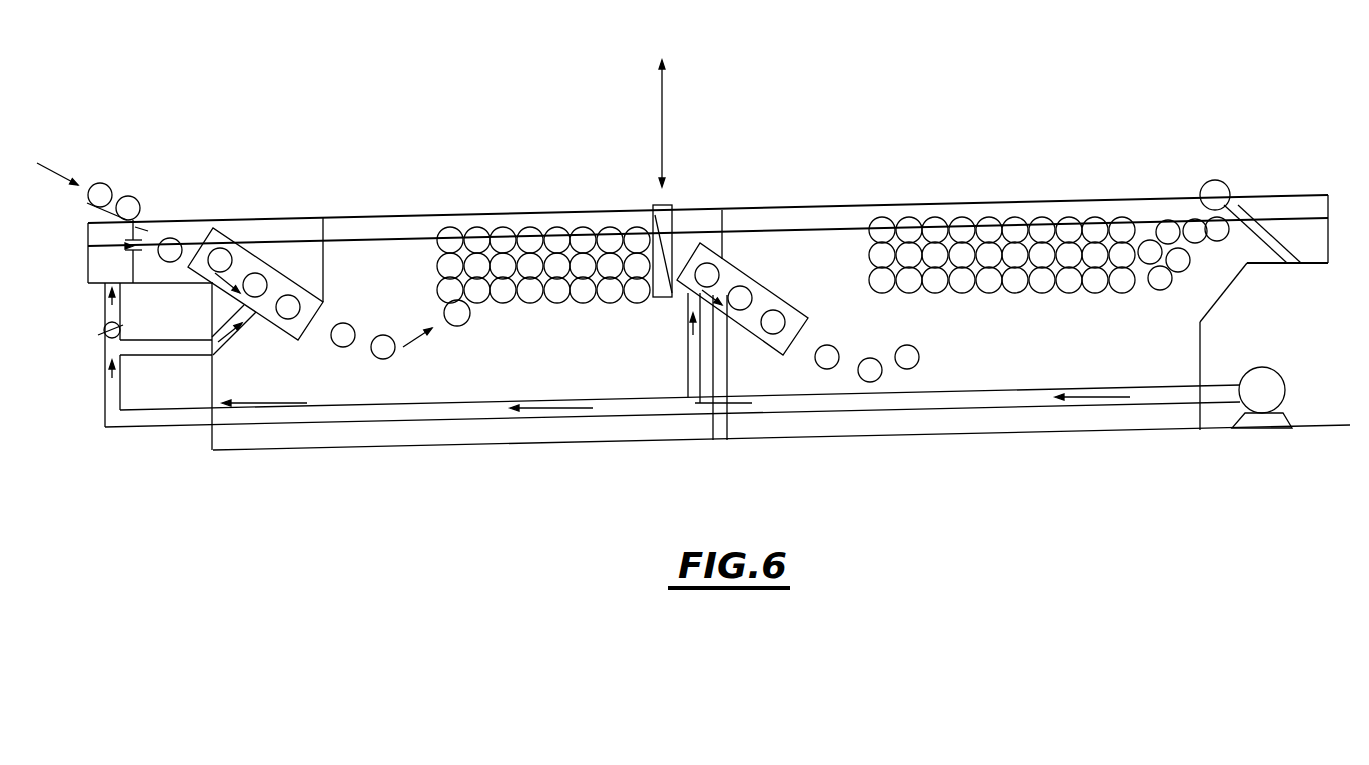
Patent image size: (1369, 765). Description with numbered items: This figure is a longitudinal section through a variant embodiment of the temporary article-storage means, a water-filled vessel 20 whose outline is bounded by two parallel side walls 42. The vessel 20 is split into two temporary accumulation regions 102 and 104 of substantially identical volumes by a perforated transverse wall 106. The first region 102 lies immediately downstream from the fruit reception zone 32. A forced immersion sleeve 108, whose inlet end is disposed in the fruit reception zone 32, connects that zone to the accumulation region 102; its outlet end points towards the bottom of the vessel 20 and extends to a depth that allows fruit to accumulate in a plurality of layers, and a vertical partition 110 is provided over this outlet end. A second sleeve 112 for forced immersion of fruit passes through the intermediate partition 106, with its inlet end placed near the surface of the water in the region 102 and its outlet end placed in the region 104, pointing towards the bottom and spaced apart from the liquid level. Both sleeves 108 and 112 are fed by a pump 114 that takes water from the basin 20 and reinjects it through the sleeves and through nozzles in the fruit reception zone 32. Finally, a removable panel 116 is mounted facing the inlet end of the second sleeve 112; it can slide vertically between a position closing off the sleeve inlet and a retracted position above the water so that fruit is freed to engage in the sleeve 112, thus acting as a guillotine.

The vessel 20 is at (837, 220).
The fruit reception zone 32 is at (192, 243).
The side walls 42 is at (517, 367).
The first temporary accumulation region 102 is at (510, 203).
The second temporary accumulation region 104 is at (1035, 180).
The perforated transverse wall 106 is at (735, 237).
The forced immersion sleeve 108 is at (276, 262).
The vertical partition 110 is at (328, 275).
The second sleeve 112 is at (760, 283).
The pump 114 is at (1262, 390).
The removable panel 116 is at (652, 210).